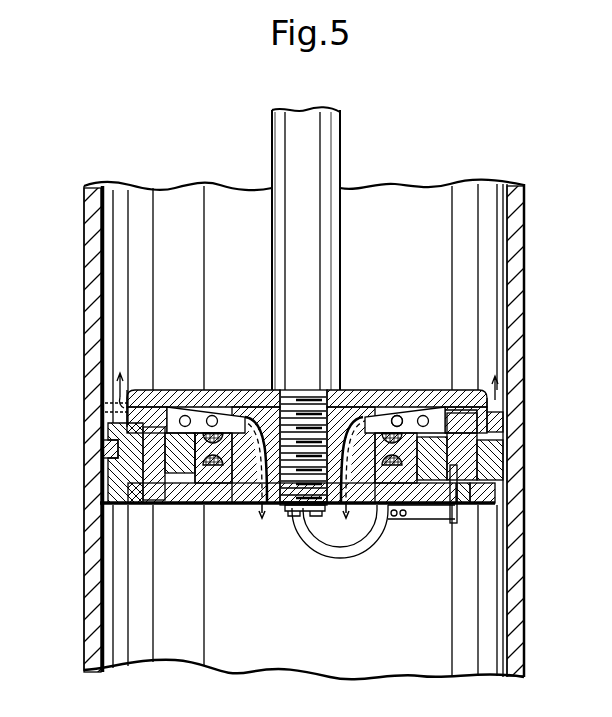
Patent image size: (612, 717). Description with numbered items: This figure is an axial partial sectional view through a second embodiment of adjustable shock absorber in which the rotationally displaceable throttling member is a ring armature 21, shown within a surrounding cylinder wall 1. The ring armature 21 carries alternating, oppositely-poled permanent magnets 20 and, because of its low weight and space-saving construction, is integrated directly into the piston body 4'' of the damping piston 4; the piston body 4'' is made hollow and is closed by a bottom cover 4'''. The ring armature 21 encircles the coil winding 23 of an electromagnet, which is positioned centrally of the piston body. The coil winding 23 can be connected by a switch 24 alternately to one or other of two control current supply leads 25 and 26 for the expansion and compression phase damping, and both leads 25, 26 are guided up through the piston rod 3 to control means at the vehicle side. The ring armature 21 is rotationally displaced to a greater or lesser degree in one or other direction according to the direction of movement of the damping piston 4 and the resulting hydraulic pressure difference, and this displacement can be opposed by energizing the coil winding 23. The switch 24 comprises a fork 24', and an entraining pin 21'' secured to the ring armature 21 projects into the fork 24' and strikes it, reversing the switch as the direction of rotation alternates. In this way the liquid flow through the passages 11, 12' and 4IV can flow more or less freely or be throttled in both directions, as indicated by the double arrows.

The wall / tube housing 1 is at (513, 264).
The piston rod 3 is at (323, 165).
The damping piston 4 is at (335, 432).
The piston body 4'' is at (135, 422).
The bottom cover 4''' is at (297, 518).
The passage 4IV is at (245, 505).
The passage 11 is at (79, 437).
The passage 12' is at (83, 382).
The permanent magnets 20 is at (478, 432).
The ring armature 21 is at (514, 460).
The entraining pin 21'' is at (512, 507).
The coil winding 23 is at (385, 412).
The switch 24 is at (416, 538).
The fork 24' is at (438, 518).
The control current supply lead 25 is at (320, 540).
The control current supply lead 26 is at (298, 530).